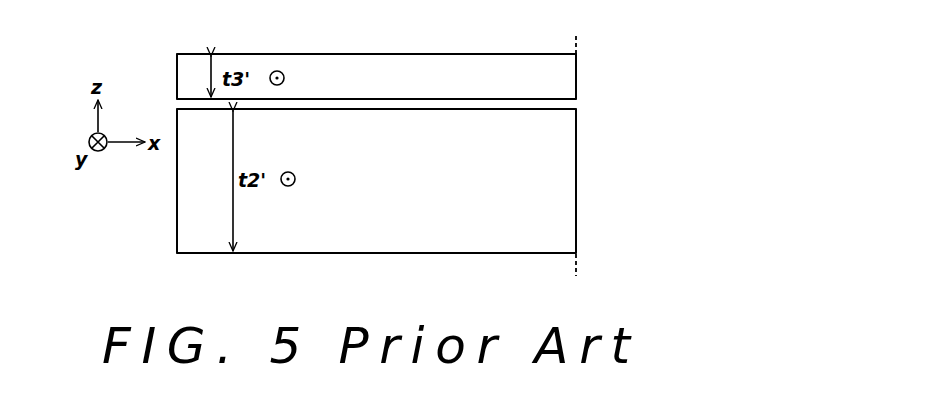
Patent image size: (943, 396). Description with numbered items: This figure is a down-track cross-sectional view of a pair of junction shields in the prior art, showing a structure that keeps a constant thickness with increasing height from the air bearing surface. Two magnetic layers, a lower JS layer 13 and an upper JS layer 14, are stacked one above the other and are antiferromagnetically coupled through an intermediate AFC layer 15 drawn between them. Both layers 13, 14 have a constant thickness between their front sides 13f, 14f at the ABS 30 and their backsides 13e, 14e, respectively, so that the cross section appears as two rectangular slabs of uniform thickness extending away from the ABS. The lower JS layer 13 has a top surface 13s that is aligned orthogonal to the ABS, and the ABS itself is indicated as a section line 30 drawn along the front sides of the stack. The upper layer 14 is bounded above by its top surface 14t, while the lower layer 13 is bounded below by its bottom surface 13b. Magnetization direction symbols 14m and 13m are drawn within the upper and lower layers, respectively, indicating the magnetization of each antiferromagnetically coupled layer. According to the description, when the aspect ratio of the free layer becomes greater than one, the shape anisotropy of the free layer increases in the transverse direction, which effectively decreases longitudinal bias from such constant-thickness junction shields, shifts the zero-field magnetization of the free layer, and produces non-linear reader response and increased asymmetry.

The lower junction shield layer 13 is at (565, 209).
The bottom surface of layer 13 13b is at (445, 255).
The backside of lower JS layer 13e is at (177, 190).
The front side of lower JS layer 13f is at (578, 168).
The top surface of lower JS layer 13s is at (362, 110).
The magnetization direction of layer 13 13m is at (312, 180).
The upper junction shield layer 14 is at (425, 70).
The top surface of layer 14 14t is at (263, 54).
The backside of upper JS layer 14e is at (177, 80).
The front side of upper JS layer 14f is at (578, 69).
The magnetization direction of layer 14 14m is at (302, 79).
The intermediate layer 15 is at (565, 104).
The air bearing surface 30 is at (578, 158).